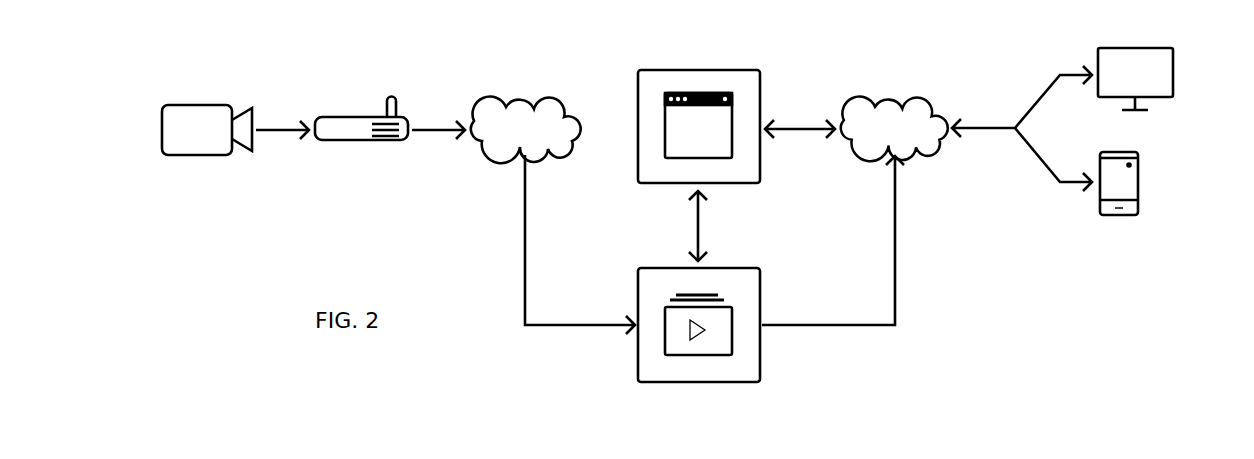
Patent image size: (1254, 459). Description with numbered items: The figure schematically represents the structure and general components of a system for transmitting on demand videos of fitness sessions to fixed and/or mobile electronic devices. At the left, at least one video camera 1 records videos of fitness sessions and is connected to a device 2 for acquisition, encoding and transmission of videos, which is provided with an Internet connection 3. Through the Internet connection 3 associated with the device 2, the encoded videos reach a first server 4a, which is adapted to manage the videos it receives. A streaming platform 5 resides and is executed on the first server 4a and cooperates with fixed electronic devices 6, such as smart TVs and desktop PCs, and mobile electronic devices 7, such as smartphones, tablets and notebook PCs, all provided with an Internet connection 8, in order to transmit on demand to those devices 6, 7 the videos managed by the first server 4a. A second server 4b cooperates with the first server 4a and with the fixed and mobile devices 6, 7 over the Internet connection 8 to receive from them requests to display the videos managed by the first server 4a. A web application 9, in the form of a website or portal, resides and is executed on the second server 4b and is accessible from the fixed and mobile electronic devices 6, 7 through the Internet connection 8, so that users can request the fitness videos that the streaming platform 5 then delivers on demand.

The video camera 1 is at (166, 130).
The device for acquisition, encoding and transmission of videos 2 is at (331, 125).
The Internet connection 3 is at (507, 97).
The first server 4a is at (655, 378).
The second server 4b is at (648, 78).
The streaming platform 5 is at (715, 344).
The fixed electronic devices 6 is at (1163, 73).
The mobile electronic devices 7 is at (1128, 183).
The Internet connection 8 is at (874, 97).
The web application 9 is at (713, 110).